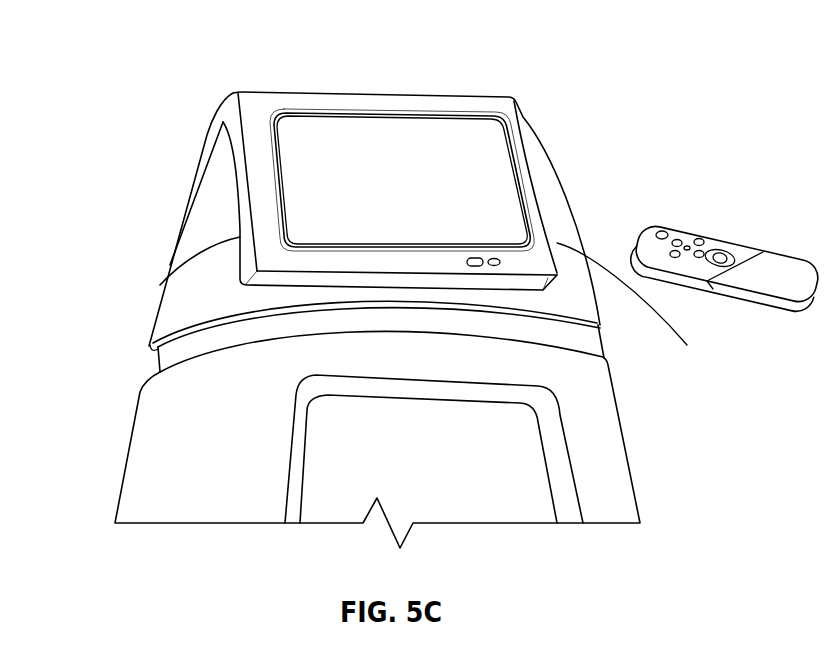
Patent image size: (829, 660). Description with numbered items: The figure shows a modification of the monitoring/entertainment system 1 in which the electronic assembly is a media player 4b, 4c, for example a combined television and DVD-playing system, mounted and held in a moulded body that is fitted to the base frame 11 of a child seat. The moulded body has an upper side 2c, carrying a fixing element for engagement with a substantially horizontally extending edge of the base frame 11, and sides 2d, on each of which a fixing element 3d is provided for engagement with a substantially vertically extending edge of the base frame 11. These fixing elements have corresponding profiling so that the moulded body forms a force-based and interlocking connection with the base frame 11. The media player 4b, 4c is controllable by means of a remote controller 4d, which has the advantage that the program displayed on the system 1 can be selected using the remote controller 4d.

The monitoring/entertainment system 1 is at (533, 81).
The upper side of the moulded body 2c is at (325, 100).
The side of the moulded body 2d is at (200, 287).
The fixing element 3d is at (152, 323).
The media player 4b is at (310, 186).
The media player 4c is at (310, 186).
The remote controller 4d is at (687, 246).
The base frame 11 is at (163, 455).